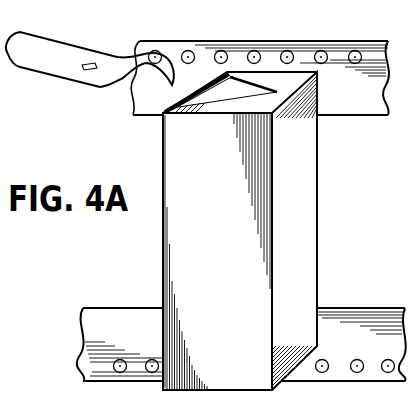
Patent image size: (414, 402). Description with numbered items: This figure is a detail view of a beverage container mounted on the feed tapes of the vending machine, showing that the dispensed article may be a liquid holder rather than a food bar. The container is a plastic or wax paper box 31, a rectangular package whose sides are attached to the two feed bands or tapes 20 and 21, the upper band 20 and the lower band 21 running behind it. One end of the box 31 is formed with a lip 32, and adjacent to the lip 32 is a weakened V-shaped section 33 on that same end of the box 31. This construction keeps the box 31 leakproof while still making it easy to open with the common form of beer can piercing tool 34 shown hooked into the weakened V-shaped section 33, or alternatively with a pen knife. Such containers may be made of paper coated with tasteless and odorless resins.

The feed band 20 is at (340, 102).
The feed band 21 is at (348, 320).
The box 31 is at (302, 215).
The lip 32 is at (161, 114).
The weakened V-shaped section 33 is at (243, 88).
The beer can piercing tool 34 is at (55, 56).